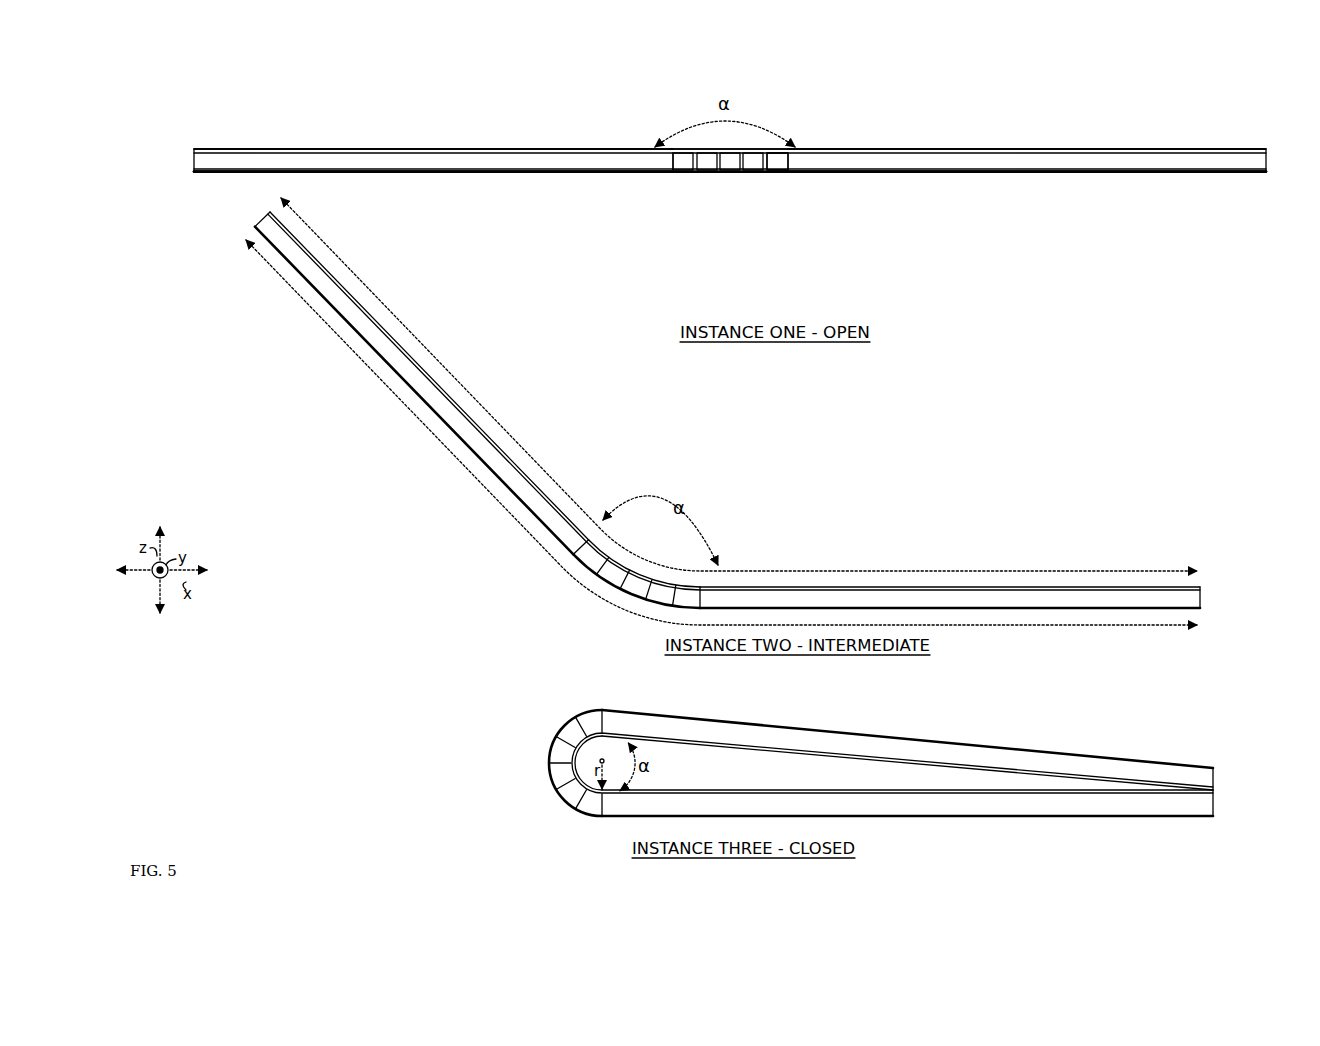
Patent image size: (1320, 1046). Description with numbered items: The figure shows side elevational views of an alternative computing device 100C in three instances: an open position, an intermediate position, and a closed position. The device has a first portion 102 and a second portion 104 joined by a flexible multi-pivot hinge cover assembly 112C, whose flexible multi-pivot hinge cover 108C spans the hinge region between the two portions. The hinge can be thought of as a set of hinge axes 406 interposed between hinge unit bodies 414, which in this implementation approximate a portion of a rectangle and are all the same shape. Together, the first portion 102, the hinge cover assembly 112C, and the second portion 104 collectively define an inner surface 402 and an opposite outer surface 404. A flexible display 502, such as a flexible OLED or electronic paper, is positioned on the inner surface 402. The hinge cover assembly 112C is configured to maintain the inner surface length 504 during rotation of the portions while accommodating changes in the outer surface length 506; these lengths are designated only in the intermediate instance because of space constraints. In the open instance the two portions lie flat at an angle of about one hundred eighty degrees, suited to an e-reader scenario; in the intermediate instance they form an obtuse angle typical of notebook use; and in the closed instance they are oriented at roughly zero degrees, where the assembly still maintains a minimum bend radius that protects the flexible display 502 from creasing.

The computing device 100C is at (467, 105).
The first portion 102 is at (1022, 745).
The second portion 104 is at (1155, 177).
The flexible multi-pivot hinge cover 108C is at (568, 828).
The flexible multi-pivot hinge cover assembly 112C is at (680, 259).
The inner surface 402 is at (1229, 150).
The outer surface 404 is at (1228, 174).
The hinge axes 406 is at (673, 154).
The hinge unit bodies 414 is at (767, 182).
The flexible display 502 is at (856, 149).
The inner surface length 504 is at (995, 570).
The outer surface length 506 is at (491, 500).